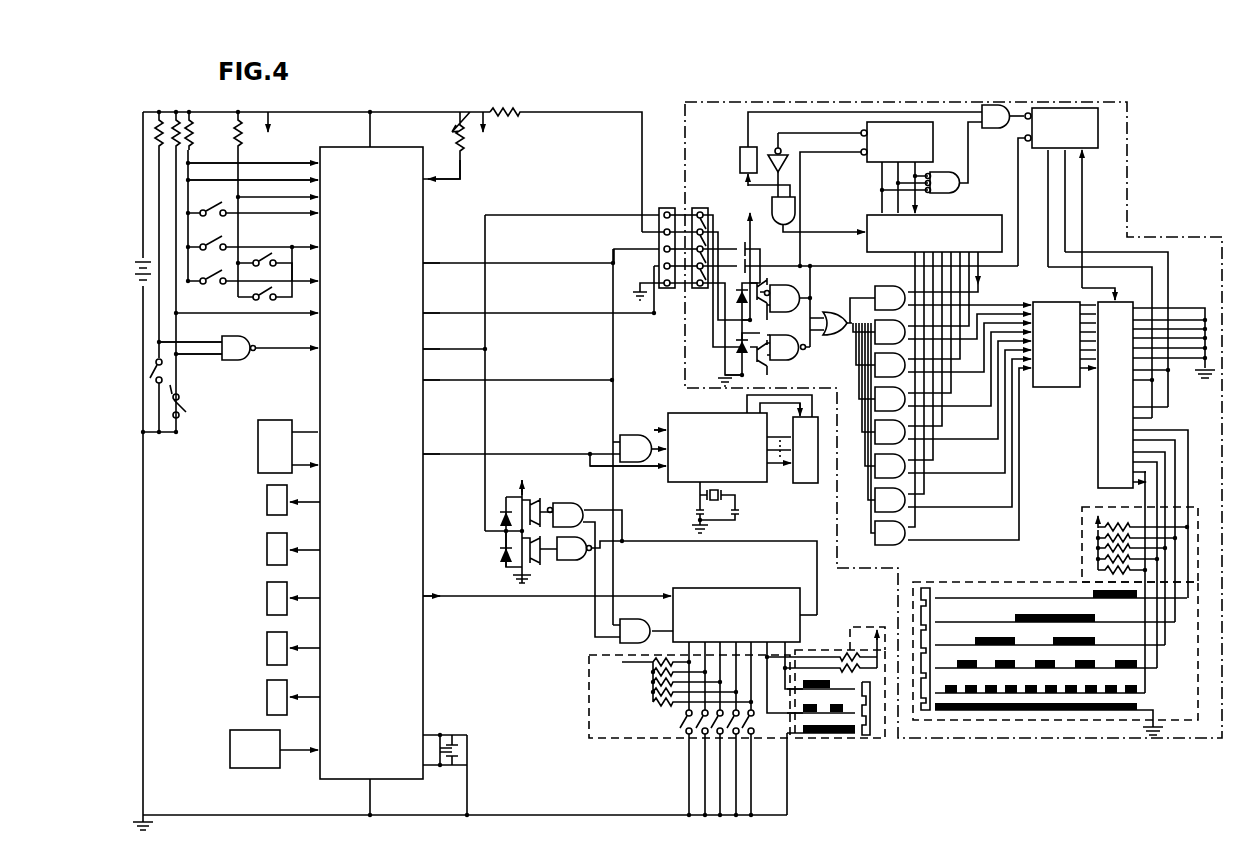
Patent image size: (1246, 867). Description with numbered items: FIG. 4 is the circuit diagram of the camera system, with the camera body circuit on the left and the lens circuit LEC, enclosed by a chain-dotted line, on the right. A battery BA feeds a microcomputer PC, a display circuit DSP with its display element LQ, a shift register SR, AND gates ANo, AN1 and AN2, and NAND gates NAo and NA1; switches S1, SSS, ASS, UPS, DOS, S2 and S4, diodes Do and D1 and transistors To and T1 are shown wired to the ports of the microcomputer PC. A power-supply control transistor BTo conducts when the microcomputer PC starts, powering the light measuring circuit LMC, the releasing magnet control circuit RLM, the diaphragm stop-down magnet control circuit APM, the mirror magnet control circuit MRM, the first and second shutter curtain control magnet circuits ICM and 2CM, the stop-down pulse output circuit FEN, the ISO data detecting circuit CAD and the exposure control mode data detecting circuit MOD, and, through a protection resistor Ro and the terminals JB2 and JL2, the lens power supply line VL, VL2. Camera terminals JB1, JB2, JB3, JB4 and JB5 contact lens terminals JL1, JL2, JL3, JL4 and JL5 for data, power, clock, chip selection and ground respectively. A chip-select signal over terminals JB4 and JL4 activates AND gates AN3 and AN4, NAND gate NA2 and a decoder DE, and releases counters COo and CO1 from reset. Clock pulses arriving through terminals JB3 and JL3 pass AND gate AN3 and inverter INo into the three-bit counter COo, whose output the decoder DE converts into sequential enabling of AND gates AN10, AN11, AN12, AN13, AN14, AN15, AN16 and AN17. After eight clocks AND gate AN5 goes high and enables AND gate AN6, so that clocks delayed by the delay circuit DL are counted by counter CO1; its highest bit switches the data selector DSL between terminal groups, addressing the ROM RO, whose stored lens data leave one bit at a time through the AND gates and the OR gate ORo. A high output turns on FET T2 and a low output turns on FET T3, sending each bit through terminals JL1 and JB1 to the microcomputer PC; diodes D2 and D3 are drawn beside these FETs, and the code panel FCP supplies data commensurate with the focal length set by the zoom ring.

The electric power source battery BA is at (138, 275).
The switch S1 is at (253, 200).
The second set switch SSS is at (253, 235).
The alarm set switch ASS is at (253, 269).
The up switch UPS is at (265, 263).
The down switch DOS is at (241, 277).
The NAND gate NAo is at (236, 352).
The switch S2 is at (150, 372).
The switch S4 is at (184, 398).
The microcomputer PC is at (425, 685).
The light measuring circuit LMC is at (278, 425).
The releasing magnet control circuit RLM is at (272, 500).
The diaphragm stop-down magnet control circuit APM is at (272, 548).
The mirror magnet control circuit MRM is at (272, 597).
The first shutter curtain control magnet circuit ICM is at (272, 647).
The second shutter curtain control magnet circuit 2CM is at (272, 696).
The stopdown pulse output circuit FEN is at (244, 758).
The transistor BTo is at (458, 120).
The protection resistor Ro is at (505, 112).
The camera body terminal JB1 is at (664, 208).
The camera body terminal JB2 is at (660, 228).
The camera body terminal JB3 is at (660, 247).
The camera body terminal JB4 is at (660, 266).
The camera body terminal JB5 is at (663, 297).
The exchangeable lens terminal JL1 is at (703, 208).
The exchangeable lens terminal JL2 is at (723, 254).
The exchangeable lens terminal JL3 is at (728, 256).
The exchangeable lens terminal JL4 is at (857, 267).
The exchangeable lens terminal JL5 is at (714, 333).
The diode Do is at (502, 525).
The diode D1 is at (500, 552).
The transistor To is at (529, 502).
The transistor T1 is at (539, 559).
The NAND gate NA1 is at (580, 500).
The AND gate ANo is at (570, 558).
The AND gate AN1 is at (627, 440).
The AND gate AN2 is at (632, 622).
The display circuit DSP is at (708, 414).
The liquid crystal display LQ is at (810, 480).
The shift register SR is at (733, 595).
The ISO data detecting circuit CAD is at (640, 726).
The exposure control mode data detecting circuit MOD is at (845, 738).
The lens circuit LEC is at (1130, 112).
The delay circuit DL is at (740, 152).
The inverter INo is at (790, 163).
The AND gate AN3 is at (797, 206).
The three bit counter COo is at (920, 142).
The AND gate AN5 is at (969, 161).
The AND gate AN6 is at (993, 130).
The counter CO1 is at (1082, 148).
The decoder DE is at (978, 222).
The power supply line VL is at (756, 255).
The FET T2 is at (762, 291).
The diode D2 is at (738, 300).
The diode D3 is at (738, 345).
The FET T3 is at (765, 360).
The NAND gate NA2 is at (783, 311).
The AND gate AN4 is at (786, 357).
The OR gate ORo is at (826, 316).
The AND gate AN17 is at (953, 298).
The AND gate AN16 is at (953, 329).
The AND gate AN15 is at (953, 350).
The AND gate AN14 is at (953, 371).
The AND gate AN13 is at (953, 392).
The AND gate AN12 is at (953, 414).
The AND gate AN11 is at (953, 435).
The AND gate AN10 is at (953, 456).
The ROM RO is at (1062, 382).
The data selector DSL is at (1100, 455).
The power supply line VL2 is at (1170, 402).
The code panel FCP is at (1050, 582).